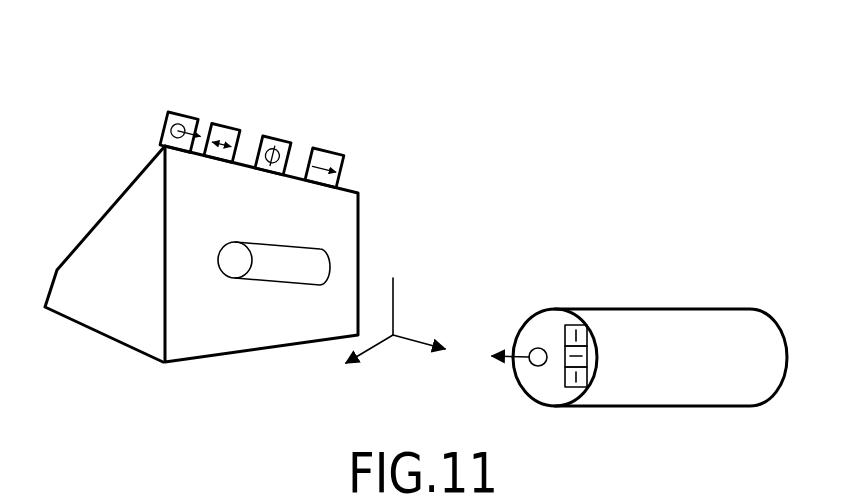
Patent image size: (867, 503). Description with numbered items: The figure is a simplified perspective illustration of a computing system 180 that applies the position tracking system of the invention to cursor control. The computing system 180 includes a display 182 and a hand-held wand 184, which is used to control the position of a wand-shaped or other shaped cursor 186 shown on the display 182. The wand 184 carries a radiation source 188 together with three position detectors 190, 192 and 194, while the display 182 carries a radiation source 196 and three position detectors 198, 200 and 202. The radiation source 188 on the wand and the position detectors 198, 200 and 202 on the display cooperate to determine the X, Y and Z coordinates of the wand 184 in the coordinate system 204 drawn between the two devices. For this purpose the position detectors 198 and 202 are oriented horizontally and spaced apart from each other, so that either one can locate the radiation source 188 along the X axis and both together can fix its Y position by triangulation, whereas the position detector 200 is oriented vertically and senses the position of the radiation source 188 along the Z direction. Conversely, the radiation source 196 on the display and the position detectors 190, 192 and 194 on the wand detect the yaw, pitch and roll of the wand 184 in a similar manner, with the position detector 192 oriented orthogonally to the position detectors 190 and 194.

The computing system 180 is at (452, 242).
The display 182 is at (122, 197).
The wand 184 is at (710, 312).
The cursor 186 is at (255, 247).
The radiation source 188 is at (537, 347).
The position detector 190 is at (588, 338).
The position detector 192 is at (588, 357).
The position detector 194 is at (588, 376).
The radiation source 196 is at (173, 110).
The position detector 198 is at (225, 122).
The position detector 200 is at (277, 134).
The position detector 202 is at (333, 147).
The coordinate system 204 is at (393, 298).